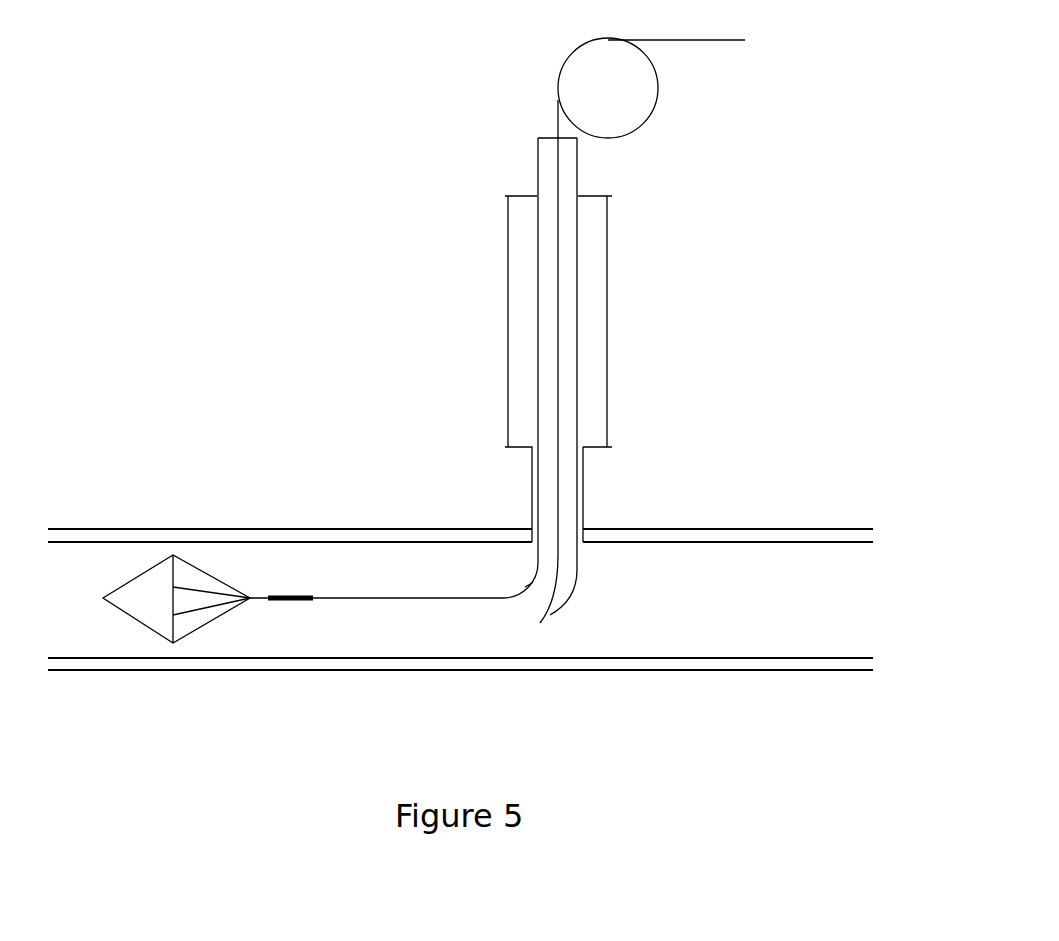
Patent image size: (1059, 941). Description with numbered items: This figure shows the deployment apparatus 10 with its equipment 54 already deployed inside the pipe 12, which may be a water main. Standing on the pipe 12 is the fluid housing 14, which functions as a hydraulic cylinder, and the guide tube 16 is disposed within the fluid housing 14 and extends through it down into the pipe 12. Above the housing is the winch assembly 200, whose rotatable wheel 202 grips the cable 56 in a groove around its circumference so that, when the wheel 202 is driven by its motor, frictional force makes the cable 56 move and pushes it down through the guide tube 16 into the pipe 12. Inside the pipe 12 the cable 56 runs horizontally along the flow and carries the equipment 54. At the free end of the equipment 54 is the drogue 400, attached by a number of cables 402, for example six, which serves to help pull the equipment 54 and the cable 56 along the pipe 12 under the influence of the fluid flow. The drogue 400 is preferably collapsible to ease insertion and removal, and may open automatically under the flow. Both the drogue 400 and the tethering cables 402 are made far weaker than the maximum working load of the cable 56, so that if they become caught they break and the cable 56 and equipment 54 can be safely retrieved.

The apparatus 10 is at (418, 245).
The pipe 12 is at (111, 528).
The fluid housing 14 is at (508, 347).
The guide tube 16 is at (577, 375).
The equipment 54 is at (283, 603).
The cable 56 is at (422, 598).
The winch assembly 200 is at (613, 92).
The rotatable wheel 202 is at (650, 113).
The drogue 400 is at (194, 593).
The cables 402 is at (203, 572).